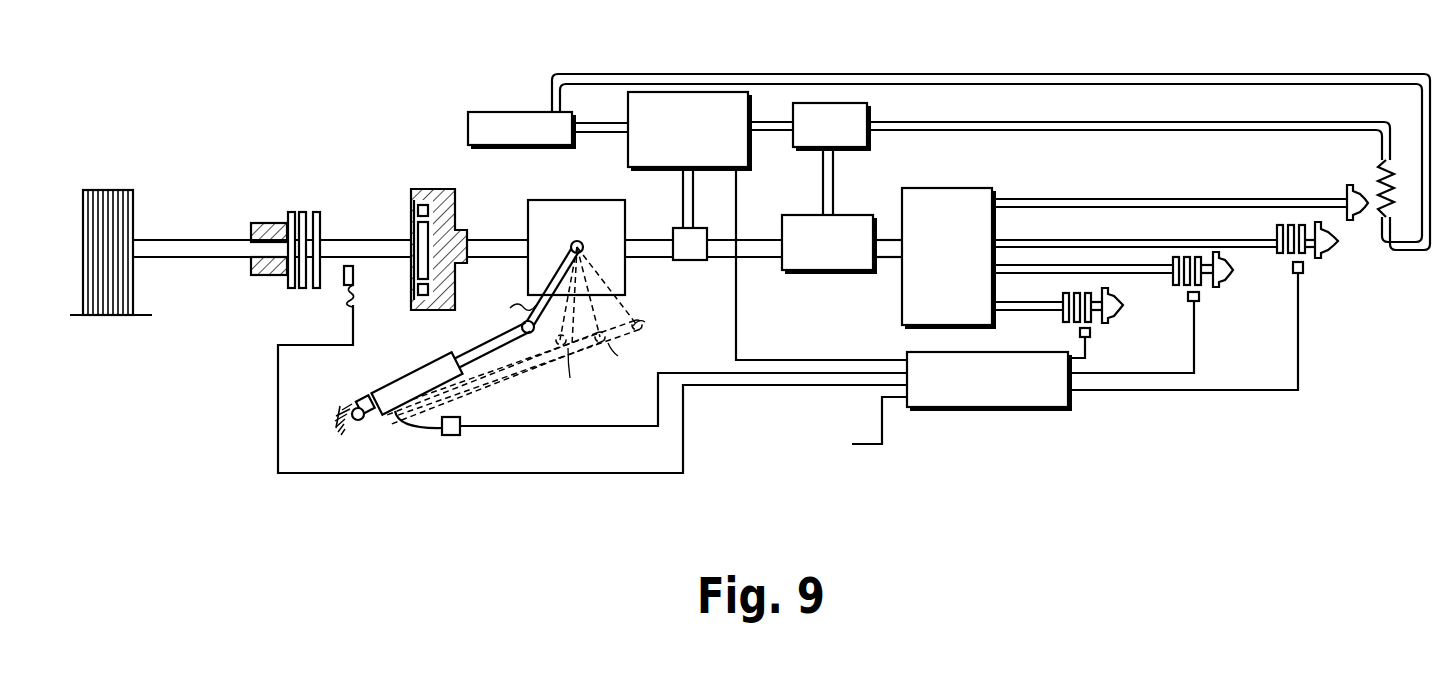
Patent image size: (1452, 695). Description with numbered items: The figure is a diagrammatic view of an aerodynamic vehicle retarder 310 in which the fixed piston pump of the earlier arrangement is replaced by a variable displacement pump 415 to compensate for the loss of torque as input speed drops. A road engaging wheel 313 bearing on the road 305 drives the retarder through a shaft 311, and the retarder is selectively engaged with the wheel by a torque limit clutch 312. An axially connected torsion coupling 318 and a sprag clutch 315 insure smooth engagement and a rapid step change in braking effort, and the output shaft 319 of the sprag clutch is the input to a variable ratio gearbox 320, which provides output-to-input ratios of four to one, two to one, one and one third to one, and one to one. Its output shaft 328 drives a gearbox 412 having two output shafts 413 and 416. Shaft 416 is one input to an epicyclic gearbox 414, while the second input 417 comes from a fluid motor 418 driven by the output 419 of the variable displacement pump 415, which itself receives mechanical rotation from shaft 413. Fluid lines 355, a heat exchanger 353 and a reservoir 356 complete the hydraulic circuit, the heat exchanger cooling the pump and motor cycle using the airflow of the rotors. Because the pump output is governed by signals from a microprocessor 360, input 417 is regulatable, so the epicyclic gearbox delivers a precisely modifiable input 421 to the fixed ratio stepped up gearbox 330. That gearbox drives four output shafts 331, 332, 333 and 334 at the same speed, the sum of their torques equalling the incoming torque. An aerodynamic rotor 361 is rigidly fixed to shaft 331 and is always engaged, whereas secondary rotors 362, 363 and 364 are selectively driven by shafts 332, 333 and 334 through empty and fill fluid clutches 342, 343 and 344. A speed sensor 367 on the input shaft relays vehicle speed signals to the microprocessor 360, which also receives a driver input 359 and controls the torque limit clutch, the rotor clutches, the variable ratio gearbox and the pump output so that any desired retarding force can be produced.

The road 305 is at (136, 315).
The retarder 310 is at (402, 152).
The shaft 311 is at (210, 240).
The torque limit clutch 312 is at (318, 212).
The road engaging wheel 313 is at (133, 210).
The sprag clutch 315 is at (450, 188).
The torsion coupling 318 is at (274, 223).
The output shaft of sprag clutch 319 is at (502, 240).
The variable ratio gearbox 320 is at (629, 282).
The output shaft of variable ratio gearbox 328 is at (656, 240).
The fixed ratio stepped up gearbox 330 is at (984, 189).
The output shaft 331 is at (1061, 198).
The output shaft 332 is at (1072, 239).
The output shaft 333 is at (1118, 264).
The output shaft 334 is at (1042, 302).
The clutch 342 is at (1276, 230).
The clutch 343 is at (1202, 286).
The clutch 344 is at (1062, 323).
The heat exchanger 353 is at (1378, 173).
The fluid lines 355 is at (1041, 74).
The reservoir 356 is at (515, 112).
The driver input 359 is at (854, 446).
The microprocessor 360 is at (1013, 409).
The aerodynamic rotor 361 is at (1352, 220).
The secondary rotor 362 is at (1321, 260).
The secondary rotor 363 is at (1232, 280).
The secondary rotor 364 is at (1116, 316).
The speed sensor 367 is at (343, 290).
The gearbox 412 is at (698, 260).
The shaft 413 is at (693, 209).
The epicyclic gearbox 414 is at (808, 272).
The variable displacement pump 415 is at (628, 155).
The shaft 416 is at (821, 264).
The second input 417 is at (833, 177).
The fluid motor 418 is at (867, 110).
The output of variable displacement pump 419 is at (781, 132).
The input to fixed ratio gearbox 421 is at (889, 259).